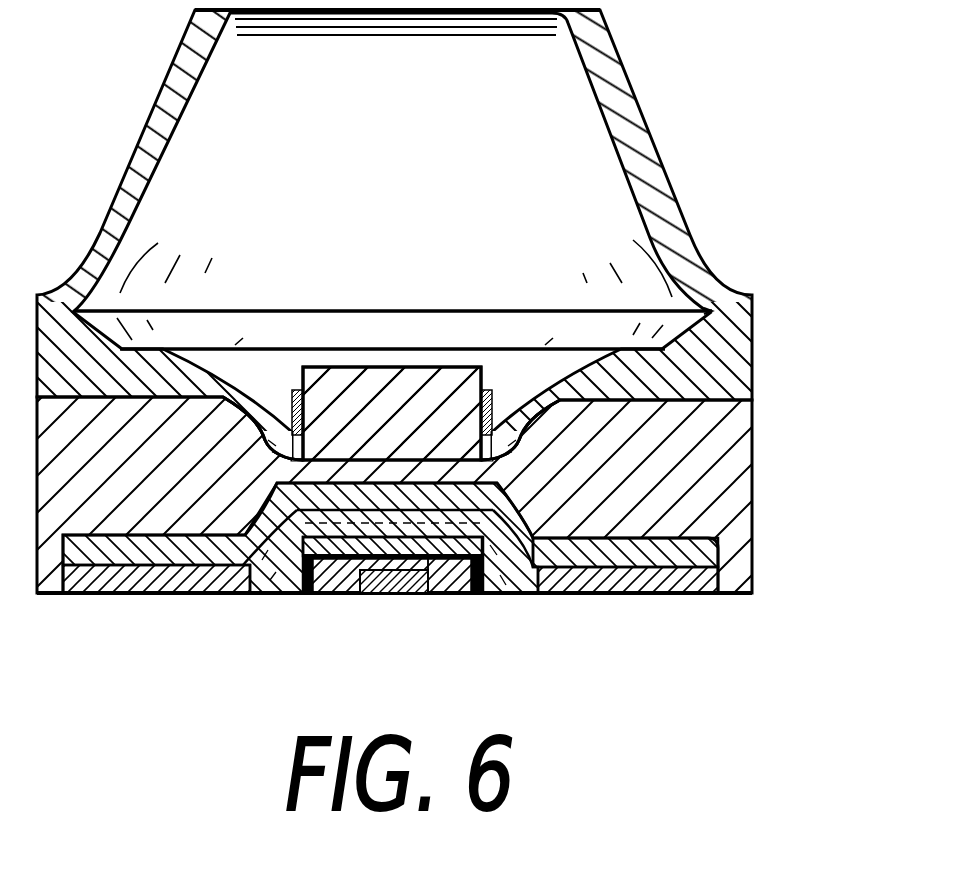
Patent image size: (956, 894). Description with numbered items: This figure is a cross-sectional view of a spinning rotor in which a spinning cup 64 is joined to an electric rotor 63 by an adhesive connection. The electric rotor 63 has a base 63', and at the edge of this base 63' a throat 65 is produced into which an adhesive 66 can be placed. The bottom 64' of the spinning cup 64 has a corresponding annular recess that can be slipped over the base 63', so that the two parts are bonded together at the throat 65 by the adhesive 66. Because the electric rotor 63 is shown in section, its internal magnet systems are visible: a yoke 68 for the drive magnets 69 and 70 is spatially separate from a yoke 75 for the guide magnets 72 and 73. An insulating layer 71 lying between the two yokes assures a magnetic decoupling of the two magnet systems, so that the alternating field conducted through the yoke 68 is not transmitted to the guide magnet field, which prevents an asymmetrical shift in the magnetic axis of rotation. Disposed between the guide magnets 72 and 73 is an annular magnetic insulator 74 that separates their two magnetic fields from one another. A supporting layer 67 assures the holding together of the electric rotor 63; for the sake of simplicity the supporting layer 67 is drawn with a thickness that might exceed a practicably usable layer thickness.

The electric rotor 63 is at (458, 480).
The base 63' is at (392, 349).
The spinning cup 64 is at (478, 236).
The bottom 64' is at (570, 304).
The throat 65 is at (303, 435).
The adhesive 66 is at (297, 392).
The supporting layer 67 is at (737, 518).
The yoke 68 is at (679, 597).
The drive magnet 69 is at (610, 595).
The drive magnet 70 is at (180, 593).
The insulating layer 71 is at (275, 593).
The guide magnet 72 is at (491, 600).
The guide magnet 73 is at (404, 595).
The annular magnetic insulator 74 is at (460, 595).
The yoke 75 is at (345, 583).